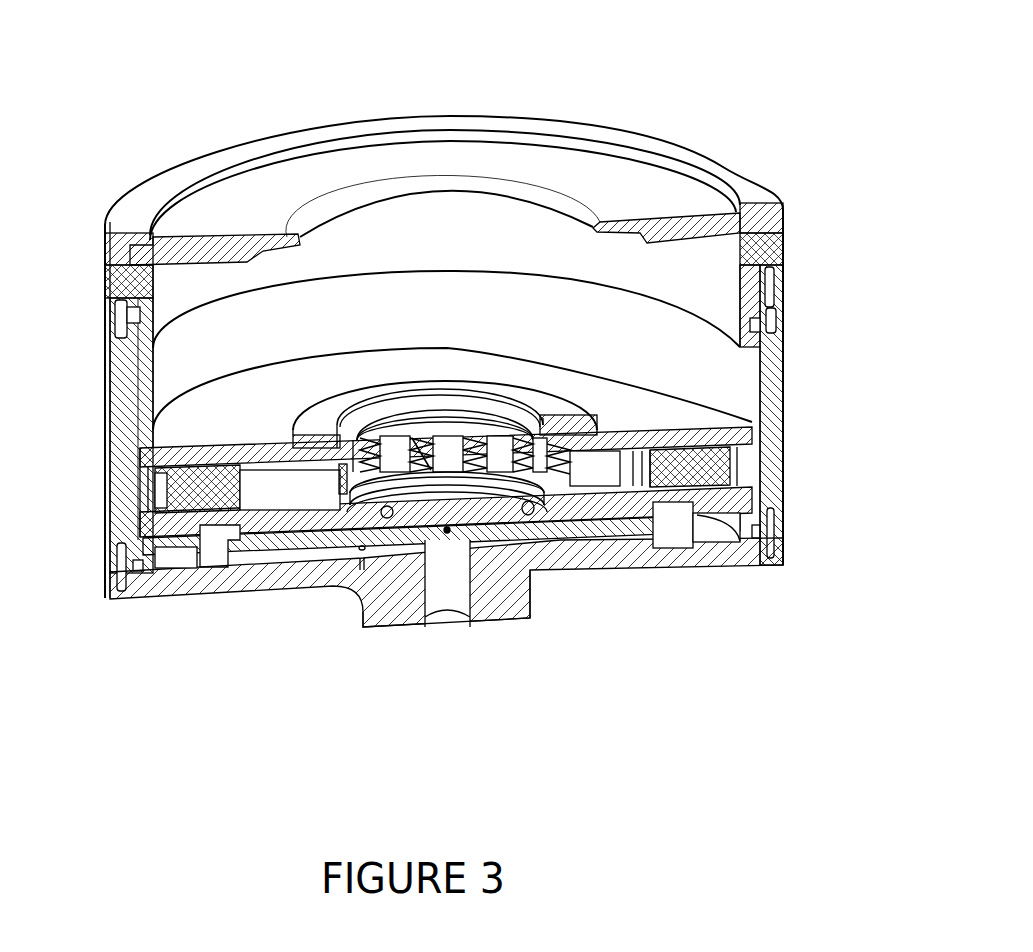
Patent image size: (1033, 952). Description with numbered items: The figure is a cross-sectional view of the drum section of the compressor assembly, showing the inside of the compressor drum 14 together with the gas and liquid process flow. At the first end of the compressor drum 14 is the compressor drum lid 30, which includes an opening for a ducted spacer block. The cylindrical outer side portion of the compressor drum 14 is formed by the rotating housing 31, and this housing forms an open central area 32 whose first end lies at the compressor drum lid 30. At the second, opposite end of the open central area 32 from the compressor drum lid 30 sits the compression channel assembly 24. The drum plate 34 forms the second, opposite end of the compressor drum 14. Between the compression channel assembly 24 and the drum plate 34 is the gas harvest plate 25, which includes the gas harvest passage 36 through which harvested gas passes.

The compressor drum 14 is at (134, 47).
The compressor drum lid 30 is at (187, 225).
The rotating housing 31 is at (110, 427).
The open central area 32 is at (383, 307).
The compression channel assembly 24 is at (190, 500).
The gas harvest passage 36 is at (221, 554).
The drum plate 34 is at (157, 580).
The gas harvest plate 25 is at (537, 562).